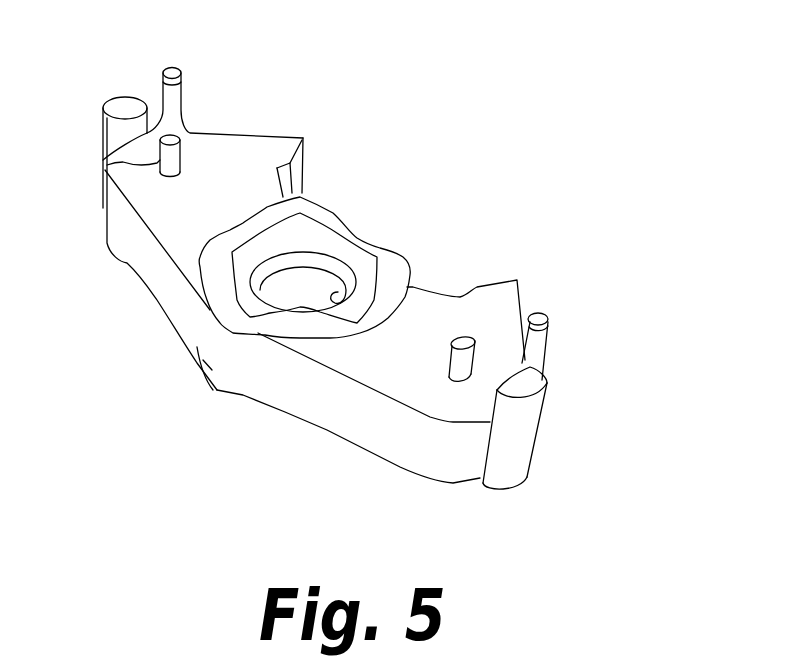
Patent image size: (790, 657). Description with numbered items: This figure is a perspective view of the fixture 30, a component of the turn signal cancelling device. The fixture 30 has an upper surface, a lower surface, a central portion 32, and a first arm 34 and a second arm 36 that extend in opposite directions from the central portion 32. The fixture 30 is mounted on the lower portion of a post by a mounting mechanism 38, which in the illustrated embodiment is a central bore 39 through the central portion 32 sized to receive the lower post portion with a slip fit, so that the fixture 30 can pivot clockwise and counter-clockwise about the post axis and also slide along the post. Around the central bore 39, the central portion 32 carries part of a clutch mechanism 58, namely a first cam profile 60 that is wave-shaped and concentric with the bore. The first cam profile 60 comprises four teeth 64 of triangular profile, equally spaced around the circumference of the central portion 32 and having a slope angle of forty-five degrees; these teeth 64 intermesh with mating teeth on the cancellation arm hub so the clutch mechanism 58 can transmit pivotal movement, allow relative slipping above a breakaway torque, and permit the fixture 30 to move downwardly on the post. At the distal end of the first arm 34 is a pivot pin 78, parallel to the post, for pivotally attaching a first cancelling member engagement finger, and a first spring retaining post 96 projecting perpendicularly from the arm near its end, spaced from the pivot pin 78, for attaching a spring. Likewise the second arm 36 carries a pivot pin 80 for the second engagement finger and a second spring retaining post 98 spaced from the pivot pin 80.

The fixture 30 is at (547, 208).
The central portion 32 is at (213, 390).
The first arm 34 is at (123, 257).
The second arm 36 is at (412, 383).
The mounting mechanism 38 is at (330, 246).
The central bore 39 is at (340, 337).
The clutch mechanism 58 is at (495, 203).
The first cam profile 60 is at (252, 347).
The teeth 64 is at (310, 193).
The pivot pin 78 is at (103, 170).
The pivot pin 80 is at (455, 383).
The first spring retaining post 96 is at (180, 100).
The second spring retaining post 98 is at (548, 318).